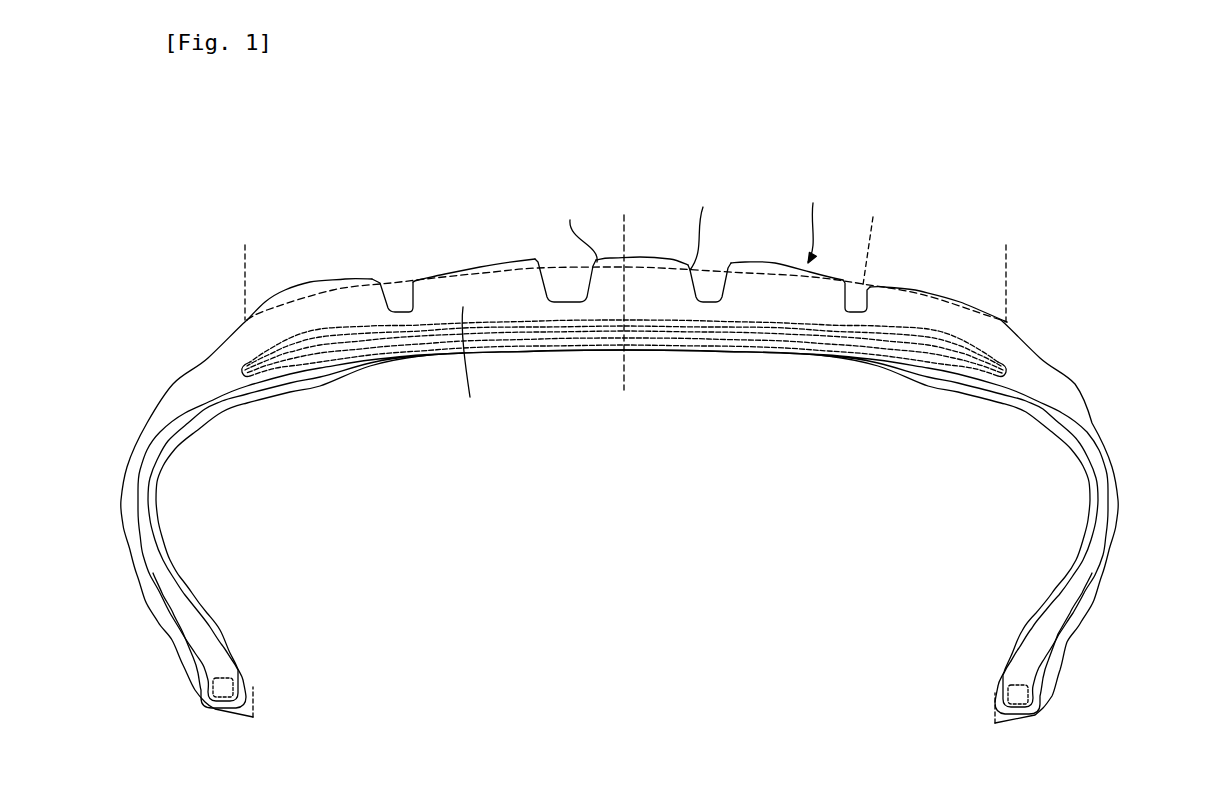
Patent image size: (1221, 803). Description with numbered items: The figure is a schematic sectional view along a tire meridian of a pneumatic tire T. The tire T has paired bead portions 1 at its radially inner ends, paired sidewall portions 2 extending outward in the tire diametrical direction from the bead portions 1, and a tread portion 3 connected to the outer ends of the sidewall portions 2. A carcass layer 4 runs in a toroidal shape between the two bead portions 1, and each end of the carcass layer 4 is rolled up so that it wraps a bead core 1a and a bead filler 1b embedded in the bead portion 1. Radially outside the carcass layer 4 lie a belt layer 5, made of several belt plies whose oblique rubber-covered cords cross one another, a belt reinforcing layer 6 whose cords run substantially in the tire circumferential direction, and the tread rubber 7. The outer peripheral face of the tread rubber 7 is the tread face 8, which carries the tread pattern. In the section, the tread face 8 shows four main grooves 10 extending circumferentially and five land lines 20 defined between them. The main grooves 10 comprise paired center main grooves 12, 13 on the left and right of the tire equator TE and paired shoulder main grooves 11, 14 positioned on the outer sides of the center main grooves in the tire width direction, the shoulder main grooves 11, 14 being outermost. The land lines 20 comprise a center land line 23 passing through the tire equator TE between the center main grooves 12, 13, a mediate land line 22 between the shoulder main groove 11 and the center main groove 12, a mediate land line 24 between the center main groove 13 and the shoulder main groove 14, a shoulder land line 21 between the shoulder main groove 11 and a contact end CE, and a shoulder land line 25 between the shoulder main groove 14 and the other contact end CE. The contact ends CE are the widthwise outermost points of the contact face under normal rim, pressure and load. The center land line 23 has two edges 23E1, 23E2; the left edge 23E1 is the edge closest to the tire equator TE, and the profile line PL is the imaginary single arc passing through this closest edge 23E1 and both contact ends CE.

The pneumatic tire T is at (137, 257).
The bead portion 1 is at (178, 698).
The bead core 1a is at (233, 688).
The bead filler 1b is at (225, 661).
The sidewall portion 2 is at (108, 545).
The tread portion 3 is at (360, 248).
The carcass layer 4 is at (1088, 447).
The belt layer 5 is at (868, 353).
The belt reinforcing layer 6 is at (1004, 378).
The tread rubber 7 is at (466, 365).
The tread face 8 is at (815, 219).
The main grooves 10 is at (601, 348).
The shoulder main groove 11 is at (398, 317).
The center main groove 12 is at (553, 307).
The center main groove 13 is at (697, 307).
The shoulder main groove 14 is at (845, 310).
The land lines 20 is at (627, 225).
The shoulder land line 21 is at (300, 281).
The mediate land line 22 is at (463, 267).
The center land line 23 is at (650, 256).
The edge of center land line 23E1 is at (570, 227).
The edge of center land line 23E2 is at (716, 221).
The mediate land line 24 is at (773, 263).
The shoulder land line 25 is at (943, 287).
The contact end CE is at (626, 267).
The tire equator TE is at (623, 280).
The profile line PL is at (878, 236).